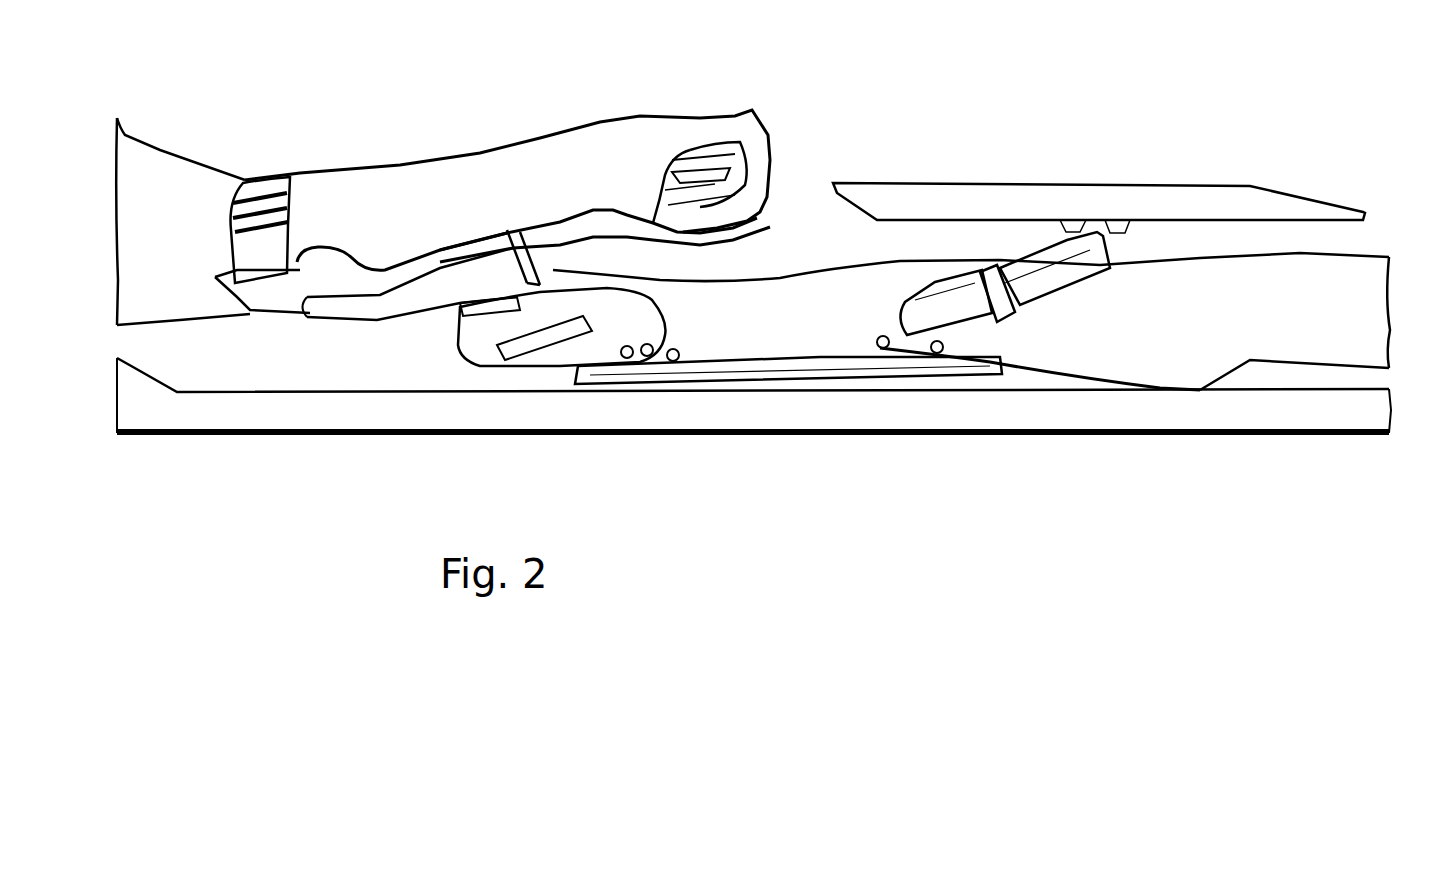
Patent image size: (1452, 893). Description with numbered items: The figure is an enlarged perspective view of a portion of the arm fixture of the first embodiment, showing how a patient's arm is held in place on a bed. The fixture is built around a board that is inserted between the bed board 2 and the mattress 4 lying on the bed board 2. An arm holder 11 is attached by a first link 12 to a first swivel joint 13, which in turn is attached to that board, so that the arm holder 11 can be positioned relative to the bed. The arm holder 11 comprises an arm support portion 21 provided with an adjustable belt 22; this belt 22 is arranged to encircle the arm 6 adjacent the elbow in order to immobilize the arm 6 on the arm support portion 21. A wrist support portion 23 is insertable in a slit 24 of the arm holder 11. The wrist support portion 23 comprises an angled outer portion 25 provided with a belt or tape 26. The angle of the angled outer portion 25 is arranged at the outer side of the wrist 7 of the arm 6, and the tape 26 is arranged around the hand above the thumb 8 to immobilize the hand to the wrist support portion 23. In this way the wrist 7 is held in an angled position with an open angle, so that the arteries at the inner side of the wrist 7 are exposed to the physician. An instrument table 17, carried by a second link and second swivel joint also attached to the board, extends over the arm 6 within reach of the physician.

The bed board 2 is at (1015, 410).
The mattress 4 is at (1115, 330).
The arm 6 is at (183, 152).
The wrist 7 is at (582, 122).
The thumb 8 is at (685, 130).
The arm holder 11 is at (400, 303).
The first link 12 is at (485, 345).
The first swivel joint 13 is at (673, 370).
The instrument table 17 is at (1058, 192).
The arm support portion 21 is at (257, 310).
The adjustable belt 22 is at (273, 180).
The wrist support portion 23 is at (568, 217).
The slit 24 is at (515, 228).
The angled outer portion 25 is at (633, 205).
The tape 26 is at (680, 165).